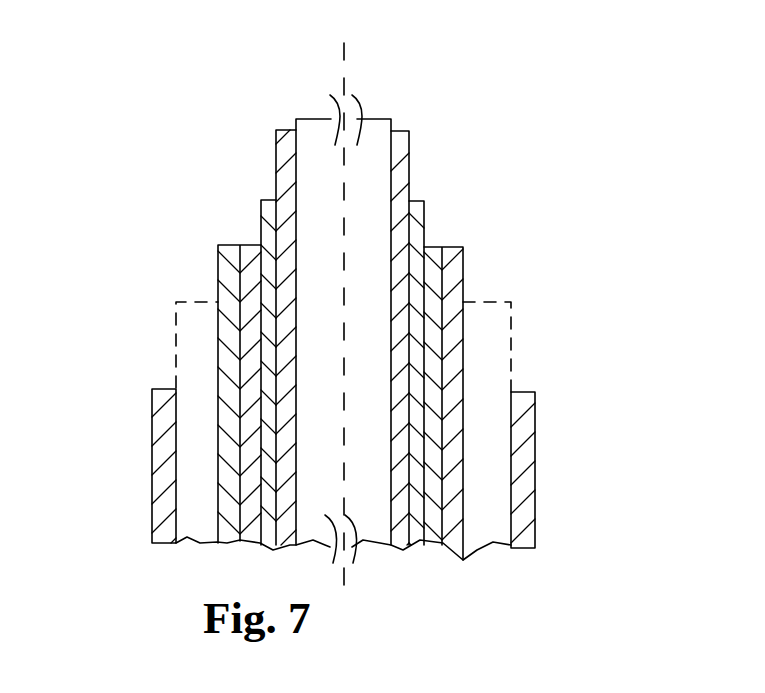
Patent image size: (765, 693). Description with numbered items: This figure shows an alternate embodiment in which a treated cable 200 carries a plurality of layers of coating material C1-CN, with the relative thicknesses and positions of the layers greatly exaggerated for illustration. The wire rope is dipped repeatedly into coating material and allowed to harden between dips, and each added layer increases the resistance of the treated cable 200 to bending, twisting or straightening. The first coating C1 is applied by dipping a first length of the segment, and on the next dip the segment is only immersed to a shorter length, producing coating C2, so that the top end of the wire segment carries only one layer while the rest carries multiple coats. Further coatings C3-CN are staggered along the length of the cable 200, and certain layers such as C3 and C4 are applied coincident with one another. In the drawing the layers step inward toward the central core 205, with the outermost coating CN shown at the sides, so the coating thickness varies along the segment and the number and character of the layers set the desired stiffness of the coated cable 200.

The treated cable 200 is at (477, 197).
The central conductive core 205 is at (370, 195).
The first coating C1 is at (276, 146).
The coating C2 is at (262, 228).
The coating C3 is at (250, 282).
The coating C4 is at (464, 256).
The coating CN is at (157, 433).